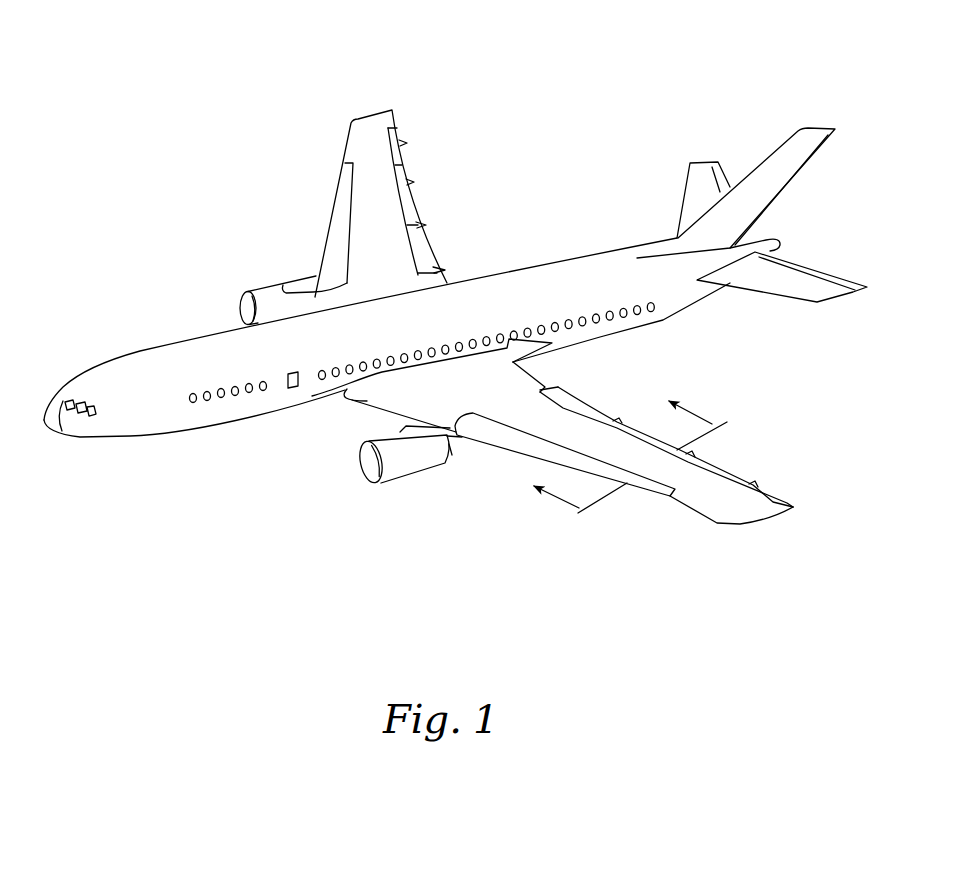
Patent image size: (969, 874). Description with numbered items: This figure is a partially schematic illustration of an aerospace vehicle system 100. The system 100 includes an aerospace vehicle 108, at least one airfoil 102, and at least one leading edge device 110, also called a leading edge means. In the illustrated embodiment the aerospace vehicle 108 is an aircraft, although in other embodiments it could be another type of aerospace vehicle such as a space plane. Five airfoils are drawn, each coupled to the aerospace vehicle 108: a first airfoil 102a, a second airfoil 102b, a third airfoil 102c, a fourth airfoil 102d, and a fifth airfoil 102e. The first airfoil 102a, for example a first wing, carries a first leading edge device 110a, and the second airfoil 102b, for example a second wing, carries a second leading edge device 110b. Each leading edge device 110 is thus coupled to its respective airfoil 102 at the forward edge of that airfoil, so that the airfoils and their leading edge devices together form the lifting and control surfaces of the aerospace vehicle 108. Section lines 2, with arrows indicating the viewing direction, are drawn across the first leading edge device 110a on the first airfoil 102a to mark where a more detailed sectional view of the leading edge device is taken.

The aerospace vehicle system 100 is at (179, 64).
The airfoil 102 is at (571, 141).
The first airfoil 102a is at (718, 518).
The second airfoil 102b is at (347, 142).
The third airfoil 102c is at (818, 290).
The fourth airfoil 102d is at (687, 172).
The fifth airfoil 102e is at (782, 158).
The aerospace vehicle 108 is at (161, 352).
The leading edge device 110 is at (287, 513).
The first leading edge device 110a is at (537, 452).
The second leading edge device 110b is at (337, 210).
The section line for FIG. 2 is at (641, 470).